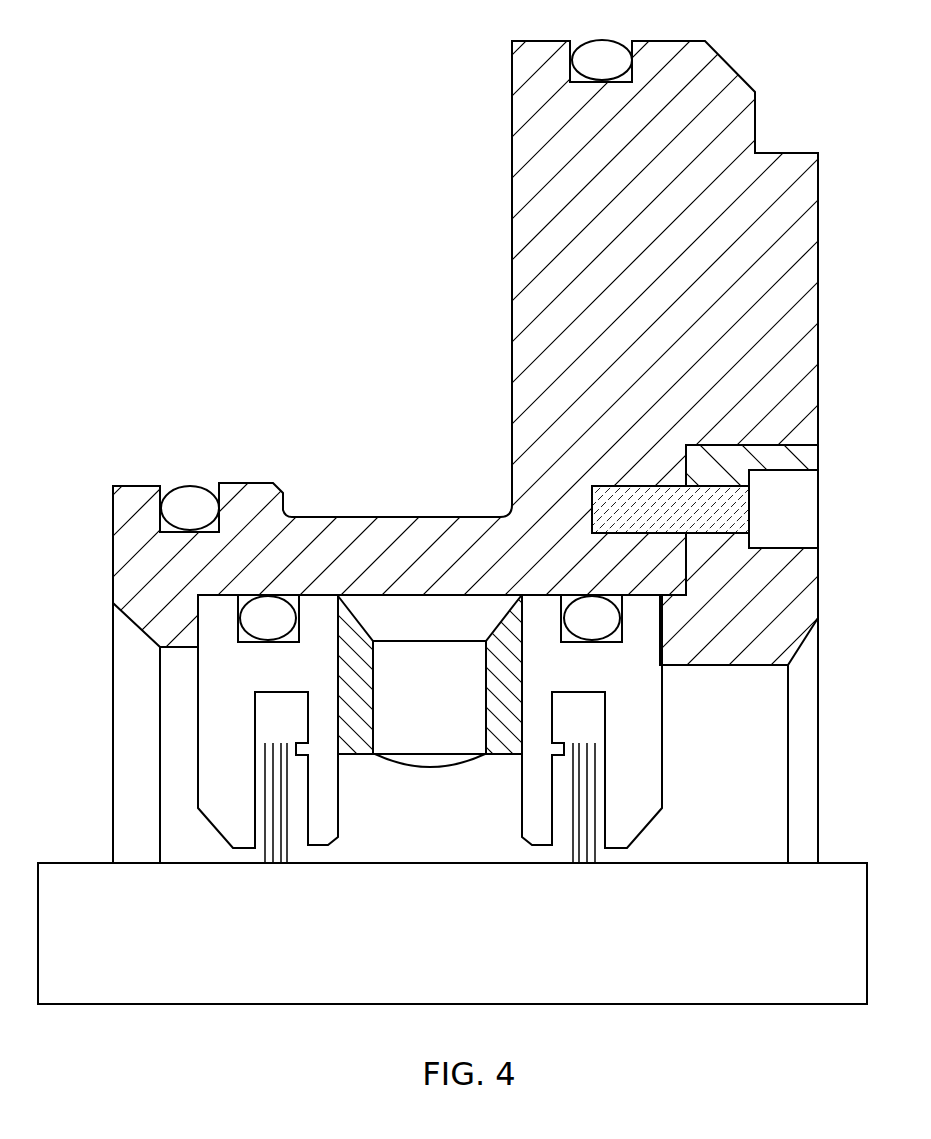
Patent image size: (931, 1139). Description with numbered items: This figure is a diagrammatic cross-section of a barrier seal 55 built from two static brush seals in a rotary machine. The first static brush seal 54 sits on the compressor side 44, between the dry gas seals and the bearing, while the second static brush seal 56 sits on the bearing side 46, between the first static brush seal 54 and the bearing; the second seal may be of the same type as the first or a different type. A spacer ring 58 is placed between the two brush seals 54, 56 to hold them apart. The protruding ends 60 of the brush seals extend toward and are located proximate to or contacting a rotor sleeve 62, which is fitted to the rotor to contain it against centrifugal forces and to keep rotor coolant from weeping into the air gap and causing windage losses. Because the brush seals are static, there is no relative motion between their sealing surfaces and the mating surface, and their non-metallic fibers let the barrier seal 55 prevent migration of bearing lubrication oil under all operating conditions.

The compressor side 44 is at (60, 773).
The bearing side 46 is at (829, 773).
The first static brush seal 54 is at (208, 830).
The barrier seal 55 is at (307, 870).
The second static brush seal 56 is at (668, 807).
The spacer ring 58 is at (425, 732).
The protruding ends 60 is at (271, 857).
The rotor sleeve 62 is at (695, 977).